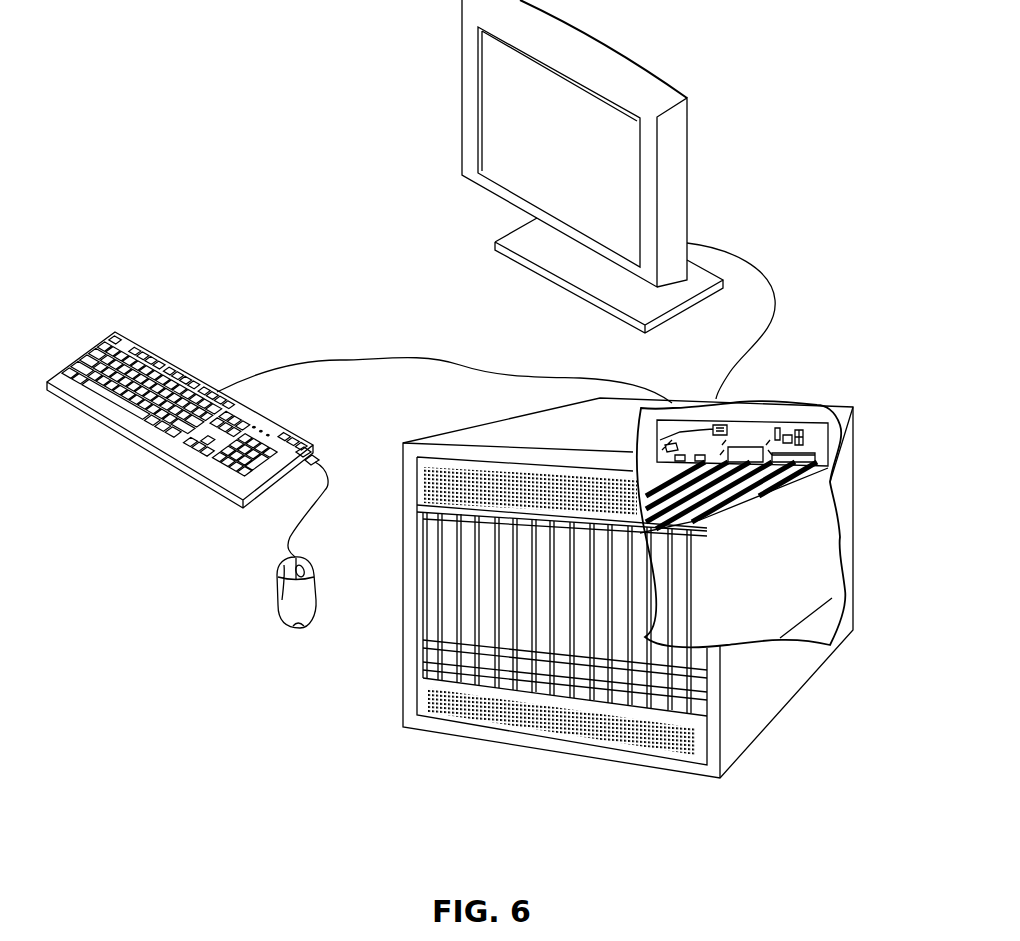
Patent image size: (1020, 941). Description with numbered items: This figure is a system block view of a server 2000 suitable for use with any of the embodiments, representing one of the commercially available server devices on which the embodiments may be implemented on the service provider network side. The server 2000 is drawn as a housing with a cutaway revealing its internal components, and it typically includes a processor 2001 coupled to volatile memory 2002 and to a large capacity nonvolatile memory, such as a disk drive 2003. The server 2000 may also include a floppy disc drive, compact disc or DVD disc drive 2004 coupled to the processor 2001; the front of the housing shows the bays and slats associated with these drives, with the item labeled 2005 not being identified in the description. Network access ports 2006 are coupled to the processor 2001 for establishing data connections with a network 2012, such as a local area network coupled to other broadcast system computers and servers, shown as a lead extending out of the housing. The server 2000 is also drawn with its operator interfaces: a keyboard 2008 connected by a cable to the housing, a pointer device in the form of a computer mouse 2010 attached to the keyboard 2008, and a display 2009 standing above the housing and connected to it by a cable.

The server 2000 is at (602, 541).
The processor 2001 is at (718, 385).
The volatile memory 2002 is at (808, 455).
The disk drive 2003 is at (468, 563).
The disc drive 2004 is at (432, 615).
The vertical slats 2005 is at (448, 587).
The network access ports 2006 is at (748, 455).
The keyboard 2008 is at (177, 363).
The display 2009 is at (687, 190).
The computer mouse 2010 is at (283, 623).
The network 2012 is at (790, 425).